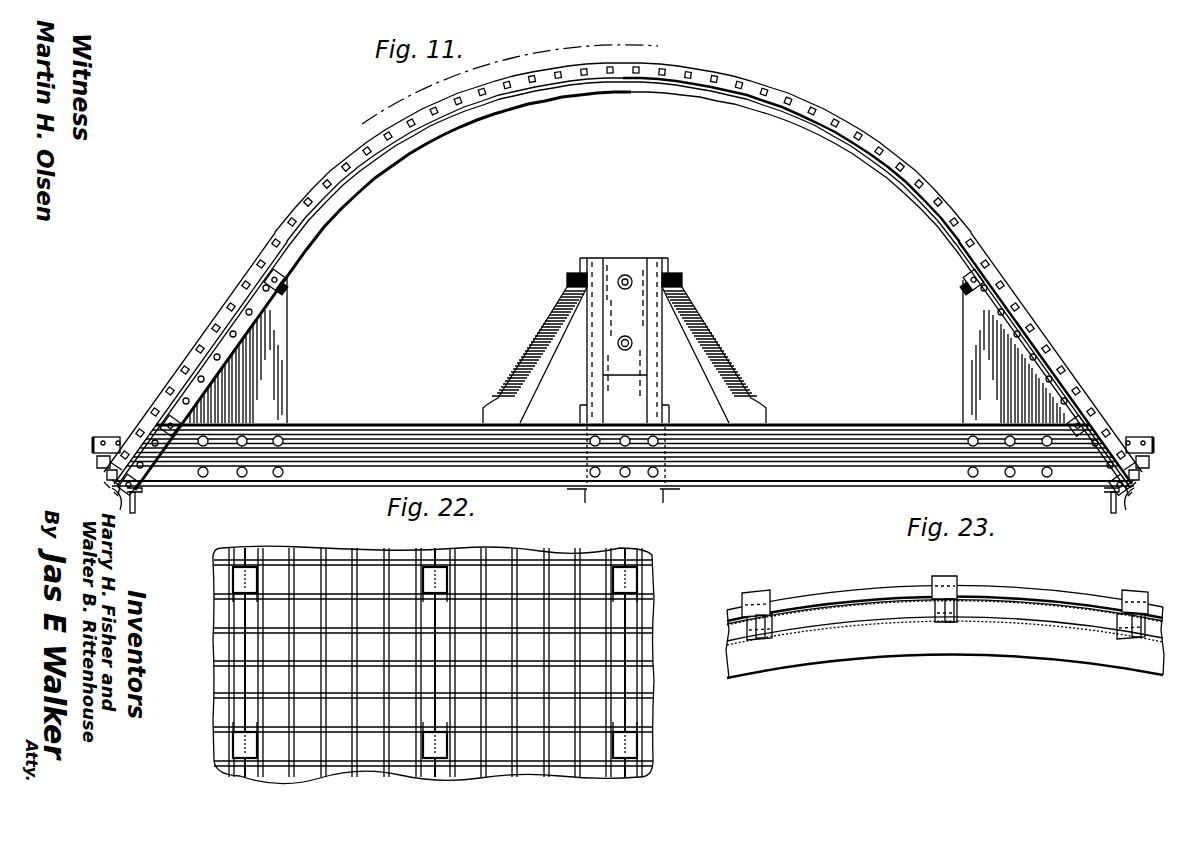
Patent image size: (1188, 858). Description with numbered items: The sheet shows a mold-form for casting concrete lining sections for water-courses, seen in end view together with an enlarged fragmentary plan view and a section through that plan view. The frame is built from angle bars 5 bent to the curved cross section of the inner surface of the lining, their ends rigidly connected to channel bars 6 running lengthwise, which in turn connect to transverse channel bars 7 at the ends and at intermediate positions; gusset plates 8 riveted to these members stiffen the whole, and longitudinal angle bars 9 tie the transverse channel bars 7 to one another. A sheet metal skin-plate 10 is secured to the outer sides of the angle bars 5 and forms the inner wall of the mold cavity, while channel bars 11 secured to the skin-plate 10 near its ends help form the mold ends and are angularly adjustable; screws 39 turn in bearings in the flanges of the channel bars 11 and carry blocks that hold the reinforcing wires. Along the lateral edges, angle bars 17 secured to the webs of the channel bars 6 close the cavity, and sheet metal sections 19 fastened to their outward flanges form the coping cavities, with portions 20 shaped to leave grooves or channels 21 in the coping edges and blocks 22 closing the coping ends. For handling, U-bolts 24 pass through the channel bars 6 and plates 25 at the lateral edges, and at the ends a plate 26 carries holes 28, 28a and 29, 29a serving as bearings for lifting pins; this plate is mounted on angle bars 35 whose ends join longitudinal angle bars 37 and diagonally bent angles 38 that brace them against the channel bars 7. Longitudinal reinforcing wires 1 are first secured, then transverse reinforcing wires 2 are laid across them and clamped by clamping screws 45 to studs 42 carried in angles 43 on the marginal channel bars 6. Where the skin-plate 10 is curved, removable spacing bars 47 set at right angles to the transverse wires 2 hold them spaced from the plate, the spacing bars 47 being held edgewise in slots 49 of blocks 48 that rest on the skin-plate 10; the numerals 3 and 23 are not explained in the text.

In FIG. 22, the longitudinal reinforcing wires 1 is at (513, 615).
In FIG. 23, the longitudinal reinforcing wires 1 is at (854, 600).
In FIG. 11, the transverse reinforcing wires 2 is at (631, 504).
In FIG. 22, the transverse reinforcing wires 2 is at (497, 661).
In FIG. 23, the transverse reinforcing wires 2 is at (1038, 600).
In FIG. 11, the plate 3 is at (118, 441).
In FIG. 11, the angle bars 5 is at (876, 170).
In FIG. 23, the angle bars 5 is at (1015, 647).
In FIG. 11, the channel bars 6 is at (169, 465).
In FIG. 11, the transverse channel bars 7 is at (478, 484).
In FIG. 11, the gusset plates 8 is at (478, 483).
In FIG. 11, the longitudinal angle bars 9 is at (289, 277).
In FIG. 11, the skin-plate 10 is at (835, 129).
In FIG. 22, the skin-plate 10 is at (336, 548).
In FIG. 23, the skin-plate 10 is at (880, 622).
In FIG. 11, the channel bars 11 is at (762, 93).
In FIG. 23, the channel bars 11 is at (876, 604).
In FIG. 11, the angle bars 17 is at (629, 455).
In FIG. 11, the sheet metal sections 19 is at (96, 458).
In FIG. 11, the portions 20 is at (112, 478).
In FIG. 11, the longitudinal grooves or channels 21 is at (106, 473).
In FIG. 11, the blocks 22 is at (368, 92).
In FIG. 22, the section line 23 is at (198, 615).
In FIG. 11, the U-bolts 24 is at (137, 512).
In FIG. 11, the plates 25 is at (142, 491).
In FIG. 11, the plate 26 is at (638, 260).
In FIG. 11, the hole 28 is at (621, 277).
In FIG. 11, the hole 28a is at (627, 275).
In FIG. 11, the hole 29 is at (625, 337).
In FIG. 11, the hole 29a is at (625, 376).
In FIG. 11, the angle bars 35 is at (593, 366).
In FIG. 11, the longitudinal angle bars 37 is at (577, 273).
In FIG. 11, the angles 38 is at (677, 273).
In FIG. 11, the screws 39 is at (273, 236).
In FIG. 11, the studs 42 is at (1133, 490).
In FIG. 11, the angles 43 is at (118, 498).
In FIG. 11, the clamping screws 45 is at (108, 488).
In FIG. 22, the spacing bars 47 is at (238, 712).
In FIG. 23, the spacing bars 47 is at (748, 630).
In FIG. 22, the blocks 48 is at (233, 578).
In FIG. 23, the blocks 48 is at (757, 591).
In FIG. 23, the slots 49 is at (958, 597).